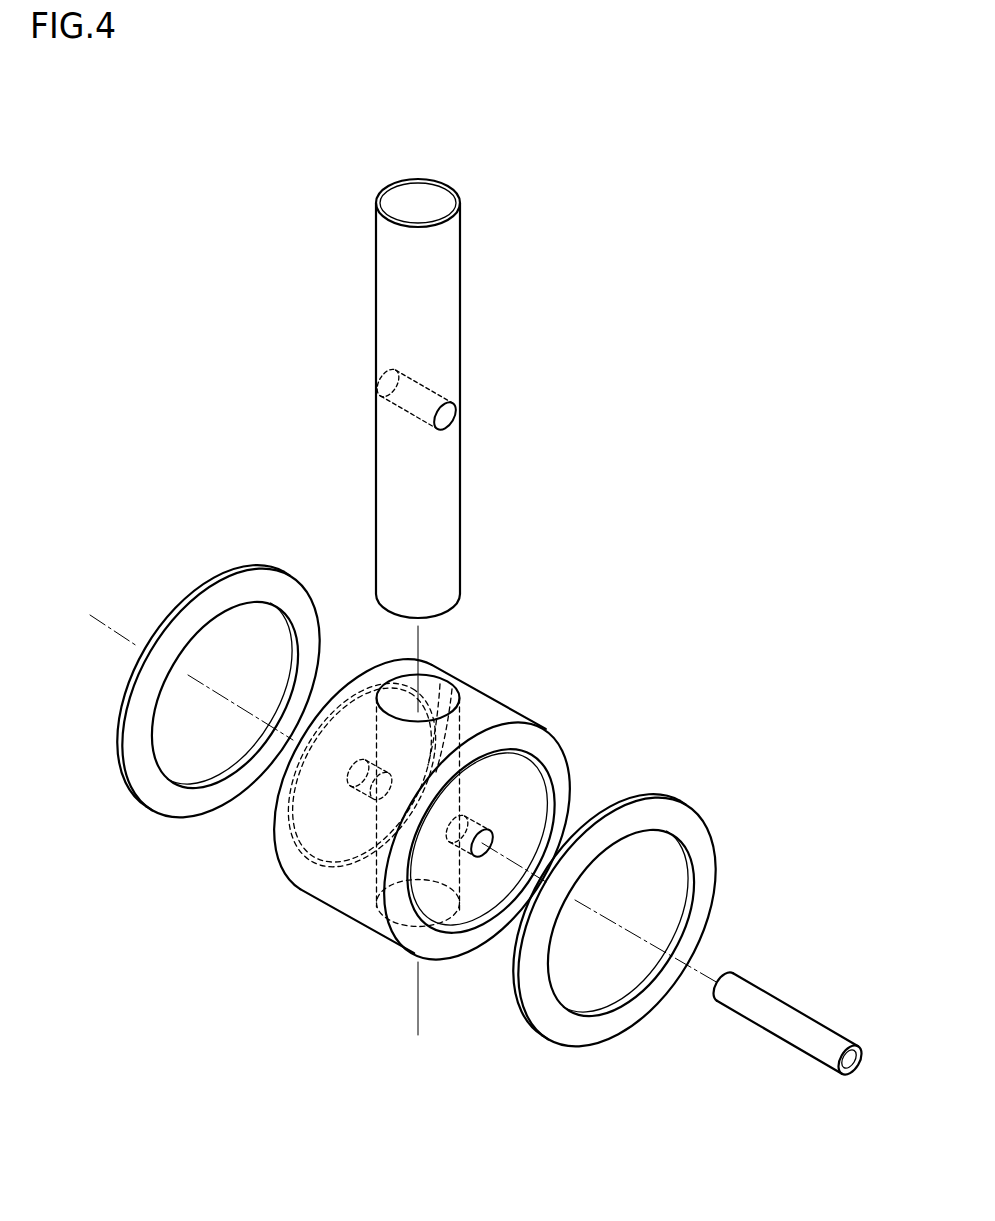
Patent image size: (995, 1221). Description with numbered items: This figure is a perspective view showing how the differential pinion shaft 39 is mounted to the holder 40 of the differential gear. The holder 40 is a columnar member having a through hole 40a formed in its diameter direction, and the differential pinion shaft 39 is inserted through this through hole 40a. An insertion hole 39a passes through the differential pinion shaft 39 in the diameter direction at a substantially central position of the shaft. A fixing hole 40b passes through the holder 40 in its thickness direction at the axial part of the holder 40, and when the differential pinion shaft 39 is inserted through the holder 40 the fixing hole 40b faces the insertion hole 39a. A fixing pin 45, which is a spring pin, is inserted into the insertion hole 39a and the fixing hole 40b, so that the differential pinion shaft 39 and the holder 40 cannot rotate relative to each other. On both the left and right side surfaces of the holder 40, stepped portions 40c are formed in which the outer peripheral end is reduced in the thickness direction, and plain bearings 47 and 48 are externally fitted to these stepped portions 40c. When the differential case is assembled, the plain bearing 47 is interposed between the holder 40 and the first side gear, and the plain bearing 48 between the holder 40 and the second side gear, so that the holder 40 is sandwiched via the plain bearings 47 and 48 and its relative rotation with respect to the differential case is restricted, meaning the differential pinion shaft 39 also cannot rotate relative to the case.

The differential pinion shaft 39 is at (481, 337).
The insertion hole 39a is at (452, 412).
The holder 40 is at (527, 703).
The through hole 40a is at (447, 682).
The fixing hole 40b is at (483, 850).
The stepped portion 40c is at (391, 670).
The fixing pin 45 is at (787, 1022).
The plain bearing 47 is at (175, 805).
The plain bearing 48 is at (582, 1037).